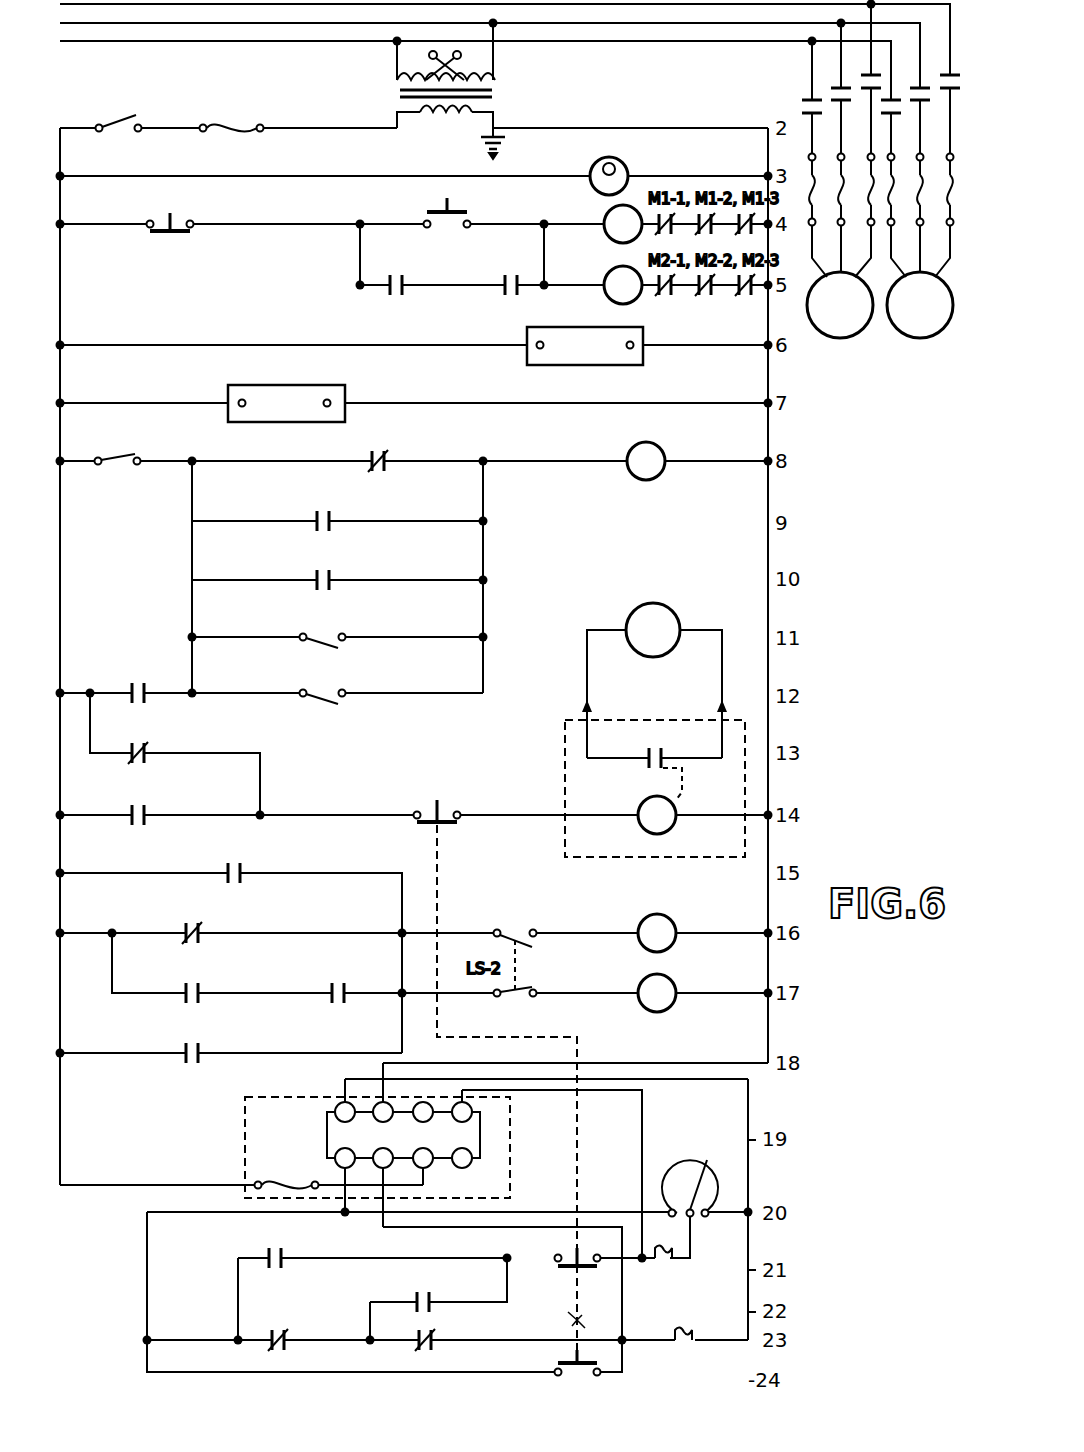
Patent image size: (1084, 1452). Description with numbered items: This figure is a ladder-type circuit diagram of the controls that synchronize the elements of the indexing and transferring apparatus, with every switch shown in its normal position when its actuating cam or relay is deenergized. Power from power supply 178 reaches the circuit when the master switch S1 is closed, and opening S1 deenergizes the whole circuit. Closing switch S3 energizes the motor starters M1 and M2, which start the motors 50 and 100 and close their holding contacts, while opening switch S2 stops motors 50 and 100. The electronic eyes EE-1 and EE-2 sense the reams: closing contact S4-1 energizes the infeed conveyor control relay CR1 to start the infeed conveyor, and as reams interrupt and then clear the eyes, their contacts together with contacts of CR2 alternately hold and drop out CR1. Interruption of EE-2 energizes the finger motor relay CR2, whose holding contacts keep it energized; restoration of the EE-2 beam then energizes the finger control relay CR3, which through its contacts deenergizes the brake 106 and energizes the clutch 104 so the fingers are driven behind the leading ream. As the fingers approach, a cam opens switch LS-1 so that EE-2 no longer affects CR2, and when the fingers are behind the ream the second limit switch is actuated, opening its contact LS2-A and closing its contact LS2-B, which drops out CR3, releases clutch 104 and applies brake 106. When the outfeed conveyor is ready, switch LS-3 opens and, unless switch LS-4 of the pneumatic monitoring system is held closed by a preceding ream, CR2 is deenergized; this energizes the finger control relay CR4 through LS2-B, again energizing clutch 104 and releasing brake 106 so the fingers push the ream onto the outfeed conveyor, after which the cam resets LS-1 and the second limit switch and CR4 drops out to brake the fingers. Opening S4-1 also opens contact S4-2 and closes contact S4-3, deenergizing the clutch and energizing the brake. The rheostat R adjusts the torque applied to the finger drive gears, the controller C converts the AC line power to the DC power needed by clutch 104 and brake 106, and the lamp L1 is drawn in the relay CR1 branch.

The power supply 178 is at (498, 95).
The clutch 104 is at (660, 1258).
The brake 106 is at (682, 1342).
The motor 100 is at (840, 305).
The motor 50 is at (920, 305).
The master switch S1 is at (128, 118).
The switch S2 is at (172, 216).
The switch S3 is at (450, 212).
The motor starter M1 is at (623, 224).
The motor starter M2 is at (623, 285).
The electronic eye EE-1 is at (585, 346).
The electronic eye EE-2 is at (286, 403).
The infeed conveyor control relay CR1 is at (657, 815).
The finger motor relay CR2 is at (646, 461).
The finger control relay CR3 is at (657, 993).
The finger control relay CR4 is at (657, 933).
The lamp L1 is at (670, 618).
The rheostat R is at (686, 1158).
The controller C is at (377, 1147).
The contact S4-1 is at (440, 802).
The contact S4-2 is at (560, 1258).
The contact S4-3 is at (542, 1364).
The switch LS-1 is at (110, 466).
The switch LS-3 is at (338, 704).
The switch LS-4 is at (338, 648).
The contact LS2-A is at (528, 1000).
The contact LS2-B is at (510, 928).